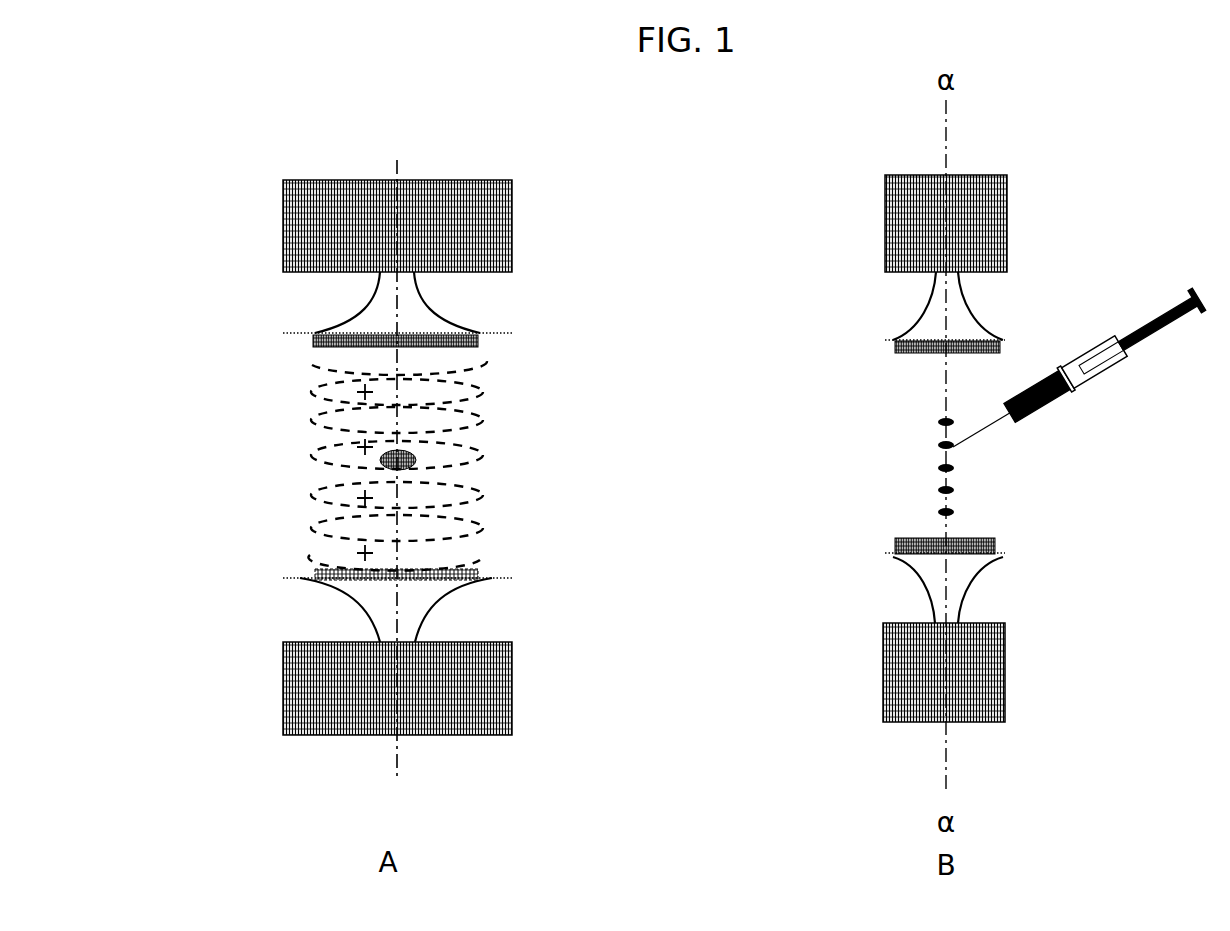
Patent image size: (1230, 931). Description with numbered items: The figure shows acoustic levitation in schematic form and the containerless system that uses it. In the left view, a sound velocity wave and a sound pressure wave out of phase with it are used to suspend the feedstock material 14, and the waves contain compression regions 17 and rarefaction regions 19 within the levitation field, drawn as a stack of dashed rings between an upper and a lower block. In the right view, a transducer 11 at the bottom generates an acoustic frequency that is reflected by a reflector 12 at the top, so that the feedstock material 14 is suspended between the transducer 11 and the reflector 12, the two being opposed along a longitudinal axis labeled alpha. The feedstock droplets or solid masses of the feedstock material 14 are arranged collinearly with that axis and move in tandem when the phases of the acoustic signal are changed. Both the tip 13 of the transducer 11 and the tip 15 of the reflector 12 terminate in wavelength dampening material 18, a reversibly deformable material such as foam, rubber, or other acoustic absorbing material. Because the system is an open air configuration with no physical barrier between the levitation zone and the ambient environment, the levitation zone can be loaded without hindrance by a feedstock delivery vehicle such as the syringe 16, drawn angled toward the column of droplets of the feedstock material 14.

In FIG. 1A, the transducer 11 is at (355, 703).
In FIG. 1B, the transducer 11 is at (885, 682).
In FIG. 1A, the reflector 12 is at (498, 218).
In FIG. 1B, the reflector 12 is at (903, 222).
In FIG. 1B, the tip of the transducer 13 is at (897, 547).
In FIG. 1B, the feedstock material 14 is at (940, 423).
In FIG. 1B, the tip of the reflector 15 is at (962, 318).
In FIG. 1B, the syringe 16 is at (1076, 373).
In FIG. 1A, the compression regions 17 is at (353, 387).
In FIG. 1B, the wavelength dampening material 18 is at (907, 352).
In FIG. 1A, the rarefaction regions 19 is at (450, 370).